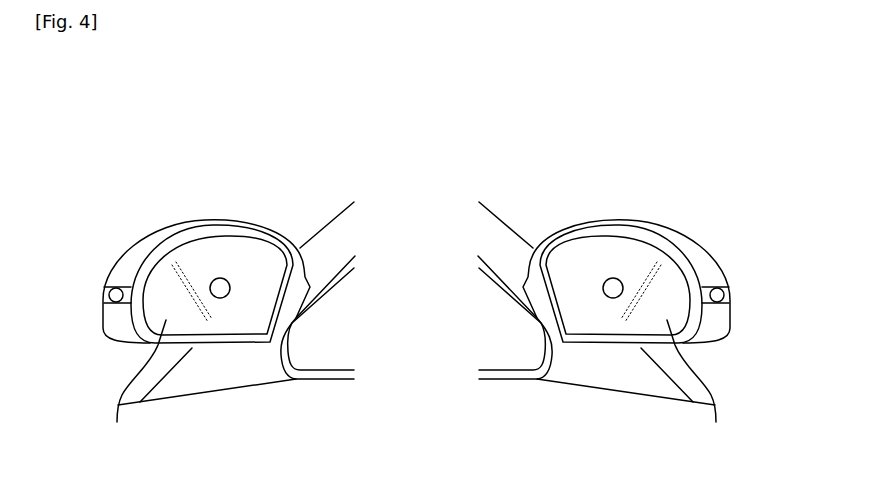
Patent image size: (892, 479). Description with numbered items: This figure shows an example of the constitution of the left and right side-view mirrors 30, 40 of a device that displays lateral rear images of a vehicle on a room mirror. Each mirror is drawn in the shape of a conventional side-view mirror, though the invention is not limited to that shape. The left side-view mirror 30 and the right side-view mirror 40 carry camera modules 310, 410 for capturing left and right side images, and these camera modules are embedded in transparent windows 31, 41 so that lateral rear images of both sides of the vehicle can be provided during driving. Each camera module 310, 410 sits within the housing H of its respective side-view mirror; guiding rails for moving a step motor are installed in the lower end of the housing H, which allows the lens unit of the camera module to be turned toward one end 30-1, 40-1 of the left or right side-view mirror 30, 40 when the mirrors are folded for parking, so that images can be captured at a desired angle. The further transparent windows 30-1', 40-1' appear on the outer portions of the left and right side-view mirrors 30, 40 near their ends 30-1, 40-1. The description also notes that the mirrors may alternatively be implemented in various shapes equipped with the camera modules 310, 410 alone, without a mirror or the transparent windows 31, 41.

The left side-view mirror 30 is at (131, 177).
The one end of the left side-view mirror 30-1 is at (186, 312).
The transparent window 30-1' is at (97, 263).
The transparent window 31 is at (146, 389).
The camera module 310 is at (228, 281).
The housing H is at (243, 223).
The right side-view mirror 40 is at (609, 255).
The one end of the right side-view mirror 40-1 is at (646, 312).
The transparent window 40-1' is at (734, 264).
The transparent window 41 is at (686, 388).
The camera module 410 is at (569, 223).